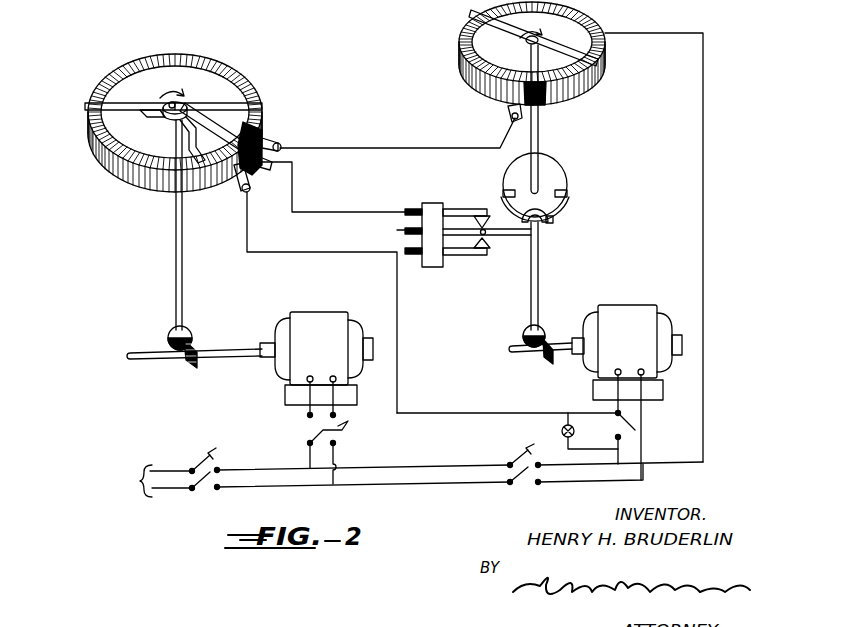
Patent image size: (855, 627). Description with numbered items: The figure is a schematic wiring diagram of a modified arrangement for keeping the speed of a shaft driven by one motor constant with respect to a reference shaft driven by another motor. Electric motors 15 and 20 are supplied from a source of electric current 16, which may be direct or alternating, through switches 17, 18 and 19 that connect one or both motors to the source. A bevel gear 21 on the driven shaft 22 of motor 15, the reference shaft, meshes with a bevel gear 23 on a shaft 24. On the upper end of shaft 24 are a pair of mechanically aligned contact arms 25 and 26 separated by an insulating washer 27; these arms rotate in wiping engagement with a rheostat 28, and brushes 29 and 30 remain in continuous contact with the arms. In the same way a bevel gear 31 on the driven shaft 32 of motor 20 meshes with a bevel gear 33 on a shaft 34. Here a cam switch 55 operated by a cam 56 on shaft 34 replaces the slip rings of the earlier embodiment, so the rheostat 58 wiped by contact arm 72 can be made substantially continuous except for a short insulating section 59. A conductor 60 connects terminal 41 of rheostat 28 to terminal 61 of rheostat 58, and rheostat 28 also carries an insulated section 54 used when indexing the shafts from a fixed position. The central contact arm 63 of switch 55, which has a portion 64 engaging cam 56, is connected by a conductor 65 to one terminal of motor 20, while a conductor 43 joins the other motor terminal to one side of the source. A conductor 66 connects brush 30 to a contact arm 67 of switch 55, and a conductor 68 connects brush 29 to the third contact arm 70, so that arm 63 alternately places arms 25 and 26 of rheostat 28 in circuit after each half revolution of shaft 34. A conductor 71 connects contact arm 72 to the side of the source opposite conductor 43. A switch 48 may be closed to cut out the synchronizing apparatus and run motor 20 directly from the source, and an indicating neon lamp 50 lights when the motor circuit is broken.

The electric motor 15 is at (329, 357).
The source of electric current 16 is at (410, 479).
The switch 17 is at (206, 456).
The switch 18 is at (344, 432).
The switch 19 is at (513, 457).
The electric motor 20 is at (640, 357).
The bevel gear 21 is at (196, 346).
The driven shaft 22 is at (226, 349).
The bevel gear 23 is at (172, 330).
The shaft 24 is at (176, 268).
The contact arm 25 is at (86, 107).
The contact arm 26 is at (262, 103).
The insulating washer 27 is at (166, 116).
The rheostat 28 is at (235, 55).
The brush 29 is at (238, 194).
The brush 30 is at (214, 124).
The bevel gear 31 is at (547, 350).
The driven shaft 32 is at (552, 342).
The bevel gear 33 is at (527, 331).
The shaft 34 is at (540, 265).
The terminal 41 is at (271, 144).
The conductor 43 is at (645, 422).
The switch 48 is at (614, 428).
The indicating neon lamp 50 is at (562, 432).
The insulated section 54 is at (250, 174).
The cam switch 55 is at (431, 203).
The cam 56 is at (560, 174).
The rheostat 58 is at (604, 70).
The insulating section 59 is at (541, 106).
The conductor 60 is at (372, 148).
The terminal 61 is at (508, 115).
The central contact arm 63 is at (503, 237).
The cam-engaging portion 64 is at (551, 219).
The conductor 65 is at (500, 413).
The conductor 66 is at (360, 212).
The contact arm 67 is at (477, 210).
The conductor 68 is at (305, 253).
The third contact arm 70 is at (476, 256).
The conductor 71 is at (703, 152).
The contact arm 72 is at (524, 39).